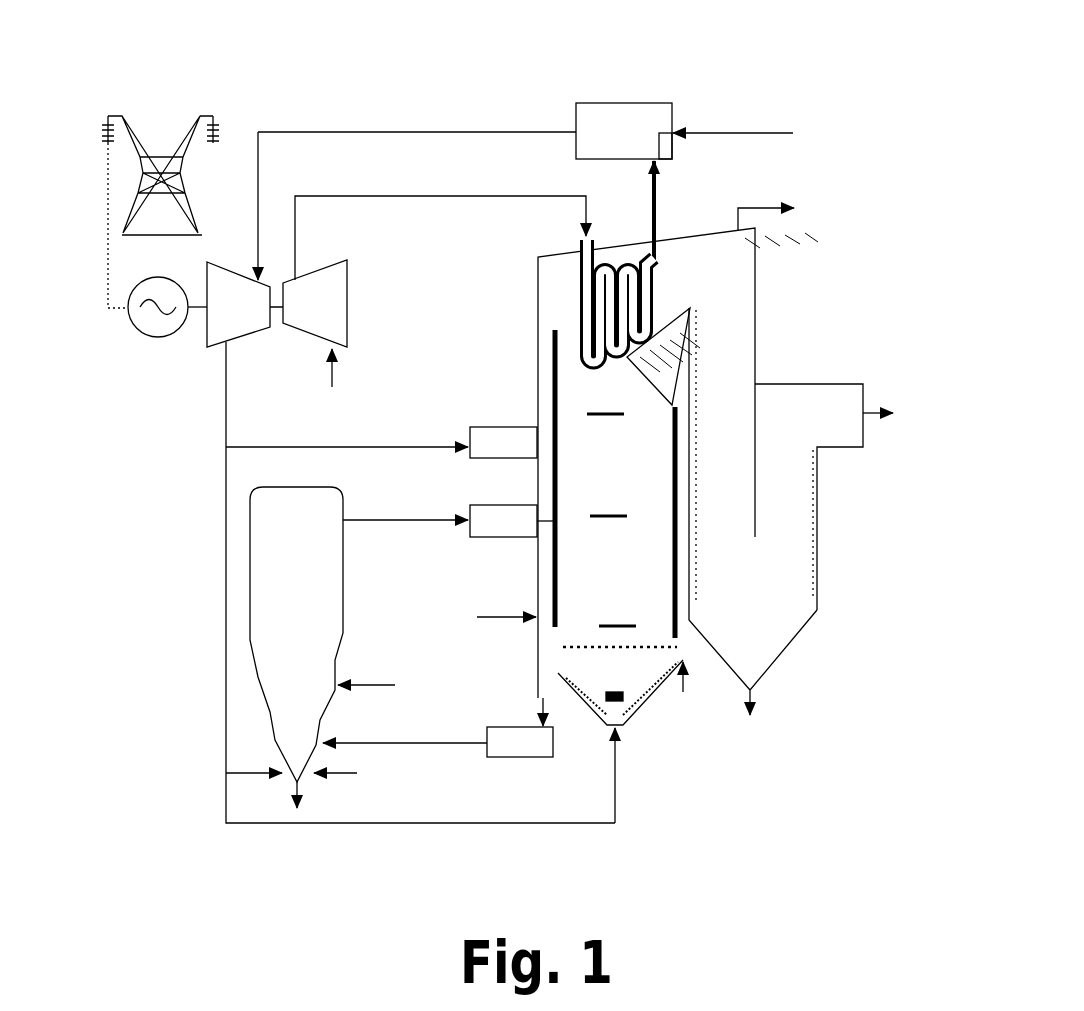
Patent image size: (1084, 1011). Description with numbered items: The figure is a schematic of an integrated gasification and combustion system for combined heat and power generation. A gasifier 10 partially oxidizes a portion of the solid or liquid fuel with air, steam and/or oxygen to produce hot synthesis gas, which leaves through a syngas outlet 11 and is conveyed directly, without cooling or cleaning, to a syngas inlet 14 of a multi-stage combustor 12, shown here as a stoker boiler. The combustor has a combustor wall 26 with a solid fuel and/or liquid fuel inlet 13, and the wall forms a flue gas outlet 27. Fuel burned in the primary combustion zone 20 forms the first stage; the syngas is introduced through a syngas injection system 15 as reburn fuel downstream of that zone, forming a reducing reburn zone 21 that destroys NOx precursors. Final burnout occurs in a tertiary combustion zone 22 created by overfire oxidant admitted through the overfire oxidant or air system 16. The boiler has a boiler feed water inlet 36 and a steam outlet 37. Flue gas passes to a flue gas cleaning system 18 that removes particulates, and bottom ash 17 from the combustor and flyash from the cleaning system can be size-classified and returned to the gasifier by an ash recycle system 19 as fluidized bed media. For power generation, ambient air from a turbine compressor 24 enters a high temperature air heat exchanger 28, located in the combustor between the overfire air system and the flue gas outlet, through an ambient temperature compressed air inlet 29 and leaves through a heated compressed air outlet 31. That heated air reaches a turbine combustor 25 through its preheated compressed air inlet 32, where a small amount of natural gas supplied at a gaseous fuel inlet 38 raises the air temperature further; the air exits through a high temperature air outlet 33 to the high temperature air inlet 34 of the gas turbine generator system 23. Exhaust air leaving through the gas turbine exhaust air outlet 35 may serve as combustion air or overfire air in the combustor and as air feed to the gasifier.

The gasifier 10 is at (250, 640).
The syngas outlet 11 is at (328, 517).
The multi-stage combustor 12 is at (652, 420).
The solid fuel and/or liquid fuel inlet 13 is at (537, 620).
The syngas inlet 14 is at (540, 520).
The syngas injection system 15 is at (493, 505).
The overfire oxidant or air system 16 is at (487, 427).
The bottom ash 17 is at (562, 697).
The flue gas cleaning system 18 is at (775, 645).
The ash recycle system 19 is at (553, 757).
The primary combustion zone 20 is at (616, 610).
The reburn zone 21 is at (607, 500).
The tertiary combustion zone 22 is at (604, 398).
The gas turbine generator system 23 is at (202, 333).
The turbine compressor 24 is at (347, 268).
The turbine combustor 25 is at (617, 103).
The combustor wall 26 is at (673, 640).
The flue gas outlet 27 is at (700, 293).
The high temperature air heat exchanger 28 is at (658, 285).
The ambient temperature compressed air inlet 29 is at (583, 237).
The heated compressed air outlet 31 is at (660, 213).
The preheated compressed air inlet 32 is at (663, 133).
The high temperature air outlet 33 is at (576, 128).
The high temperature air inlet 34 is at (257, 280).
The gas turbine exhaust air outlet 35 is at (225, 343).
The boiler feed water inlet 36 is at (683, 660).
The steam outlet 37 is at (755, 230).
The gaseous fuel inlet 38 is at (683, 127).